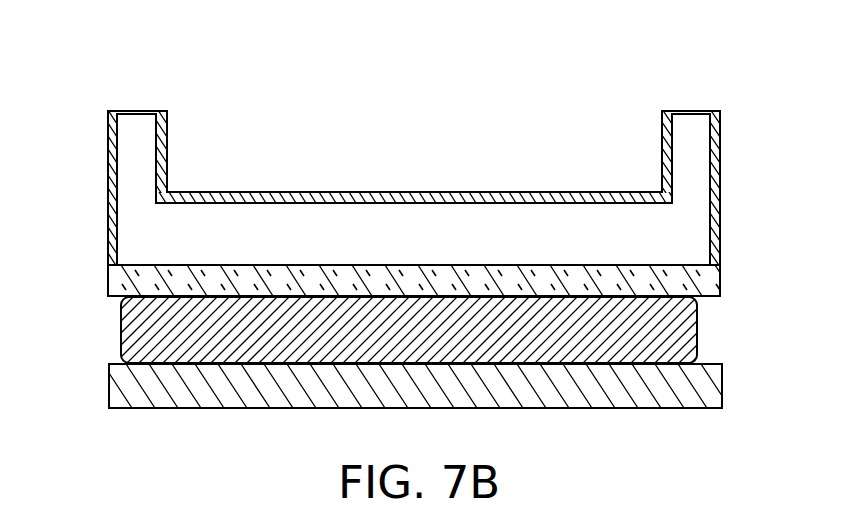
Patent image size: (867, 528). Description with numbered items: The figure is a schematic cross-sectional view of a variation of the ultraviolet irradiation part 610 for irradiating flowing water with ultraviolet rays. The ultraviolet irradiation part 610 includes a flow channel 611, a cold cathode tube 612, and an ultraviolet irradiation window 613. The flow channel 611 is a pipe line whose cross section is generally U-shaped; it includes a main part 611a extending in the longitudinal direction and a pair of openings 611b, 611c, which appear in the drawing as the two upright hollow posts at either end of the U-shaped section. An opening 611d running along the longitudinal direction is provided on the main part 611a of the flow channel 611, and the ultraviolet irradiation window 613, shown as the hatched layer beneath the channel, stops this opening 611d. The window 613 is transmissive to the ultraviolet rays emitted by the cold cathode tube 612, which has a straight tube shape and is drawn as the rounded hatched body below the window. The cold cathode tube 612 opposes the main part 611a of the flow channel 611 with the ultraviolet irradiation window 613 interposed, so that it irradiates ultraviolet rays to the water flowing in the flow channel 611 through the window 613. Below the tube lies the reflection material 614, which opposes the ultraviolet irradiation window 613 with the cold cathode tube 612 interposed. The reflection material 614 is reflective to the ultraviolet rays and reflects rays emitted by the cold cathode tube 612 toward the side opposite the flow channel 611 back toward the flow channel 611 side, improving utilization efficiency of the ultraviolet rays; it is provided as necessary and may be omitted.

The ultraviolet irradiation part 610 is at (527, 107).
The flow channel 611 is at (729, 136).
The main part 611a is at (407, 191).
The opening 611b is at (133, 110).
The opening 611c is at (687, 110).
The opening 611d is at (112, 224).
The cold cathode tube 612 is at (667, 327).
The ultraviolet irradiation window 613 is at (703, 283).
The reflection material 614 is at (705, 387).